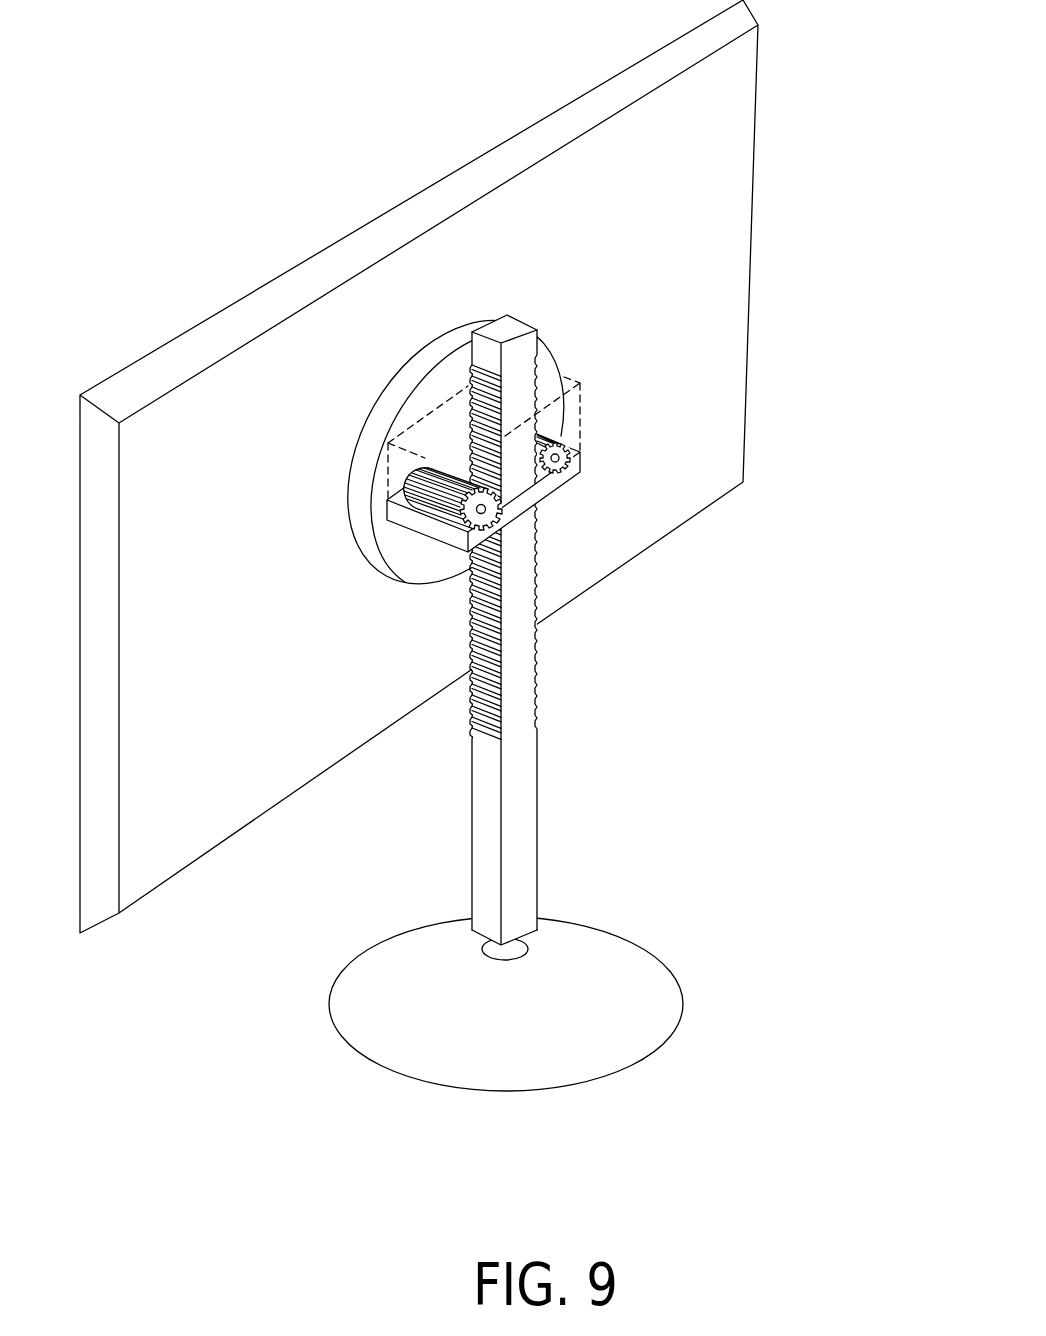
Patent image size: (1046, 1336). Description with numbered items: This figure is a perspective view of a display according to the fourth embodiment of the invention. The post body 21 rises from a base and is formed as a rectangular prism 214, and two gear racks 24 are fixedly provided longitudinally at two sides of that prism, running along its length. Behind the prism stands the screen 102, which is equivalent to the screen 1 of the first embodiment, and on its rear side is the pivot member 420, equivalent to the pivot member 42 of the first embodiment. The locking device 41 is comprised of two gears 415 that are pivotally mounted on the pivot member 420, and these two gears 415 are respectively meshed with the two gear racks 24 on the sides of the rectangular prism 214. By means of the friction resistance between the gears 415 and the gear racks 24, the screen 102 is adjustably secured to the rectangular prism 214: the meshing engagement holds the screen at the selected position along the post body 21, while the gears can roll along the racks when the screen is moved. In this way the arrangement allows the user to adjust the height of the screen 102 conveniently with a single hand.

The screen 1 is at (419, 466).
The screen 102 is at (487, 178).
The pivot member 42 is at (406, 382).
The pivot member 420 is at (428, 373).
The locking device 41 is at (552, 609).
The gears 415 is at (580, 437).
The post body 21 is at (587, 637).
The rectangular prism 214 is at (530, 767).
The gear racks 24 is at (542, 650).